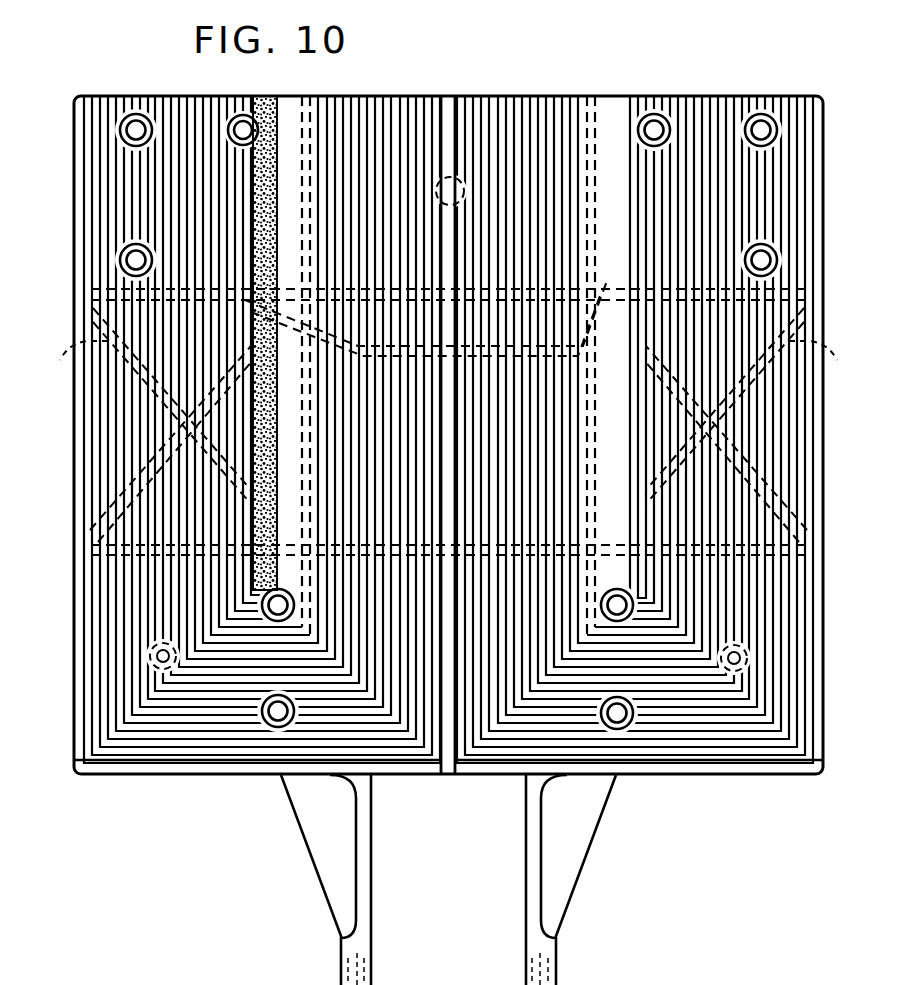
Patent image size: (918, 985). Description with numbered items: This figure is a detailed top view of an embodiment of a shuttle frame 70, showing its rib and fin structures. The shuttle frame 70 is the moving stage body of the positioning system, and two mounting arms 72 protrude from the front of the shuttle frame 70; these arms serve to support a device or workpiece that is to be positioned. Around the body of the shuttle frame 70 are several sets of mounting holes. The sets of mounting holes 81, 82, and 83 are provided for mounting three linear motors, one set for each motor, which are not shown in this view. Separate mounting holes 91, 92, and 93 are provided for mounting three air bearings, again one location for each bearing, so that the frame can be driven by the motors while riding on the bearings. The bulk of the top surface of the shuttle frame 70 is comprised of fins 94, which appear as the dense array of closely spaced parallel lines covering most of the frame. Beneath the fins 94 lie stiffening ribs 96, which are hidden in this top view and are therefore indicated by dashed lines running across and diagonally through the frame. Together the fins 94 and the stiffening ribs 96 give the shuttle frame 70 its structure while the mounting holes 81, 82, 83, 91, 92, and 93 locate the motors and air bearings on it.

The shuttle frame 70 is at (858, 335).
The mounting arms 72 is at (516, 968).
The mounting holes 81 is at (448, 792).
The mounting holes 82 is at (751, 195).
The mounting holes 83 is at (146, 195).
The mounting holes 91 is at (234, 429).
The mounting holes 92 is at (659, 429).
The mounting holes 93 is at (458, 402).
The fins 94 is at (592, 67).
The stiffening ribs 96 is at (434, 336).